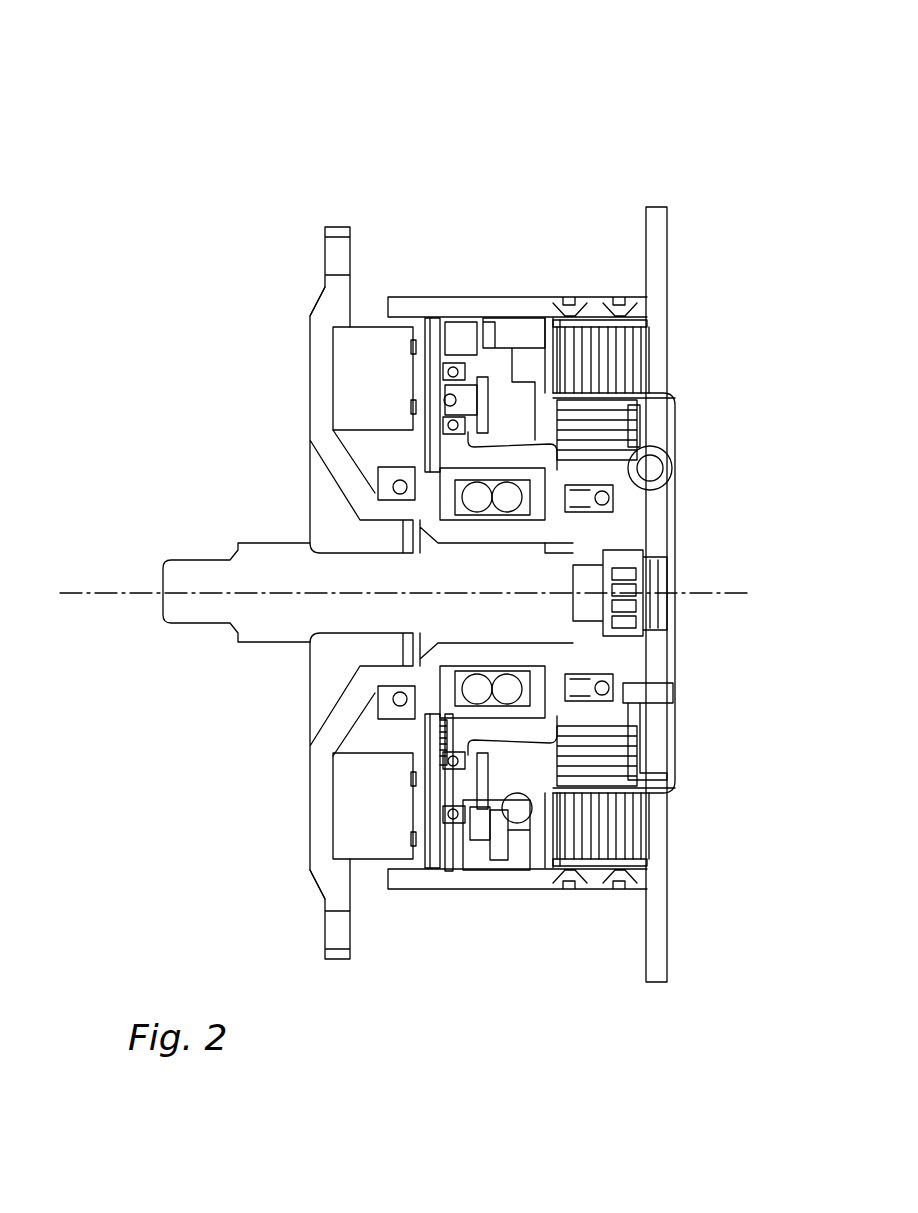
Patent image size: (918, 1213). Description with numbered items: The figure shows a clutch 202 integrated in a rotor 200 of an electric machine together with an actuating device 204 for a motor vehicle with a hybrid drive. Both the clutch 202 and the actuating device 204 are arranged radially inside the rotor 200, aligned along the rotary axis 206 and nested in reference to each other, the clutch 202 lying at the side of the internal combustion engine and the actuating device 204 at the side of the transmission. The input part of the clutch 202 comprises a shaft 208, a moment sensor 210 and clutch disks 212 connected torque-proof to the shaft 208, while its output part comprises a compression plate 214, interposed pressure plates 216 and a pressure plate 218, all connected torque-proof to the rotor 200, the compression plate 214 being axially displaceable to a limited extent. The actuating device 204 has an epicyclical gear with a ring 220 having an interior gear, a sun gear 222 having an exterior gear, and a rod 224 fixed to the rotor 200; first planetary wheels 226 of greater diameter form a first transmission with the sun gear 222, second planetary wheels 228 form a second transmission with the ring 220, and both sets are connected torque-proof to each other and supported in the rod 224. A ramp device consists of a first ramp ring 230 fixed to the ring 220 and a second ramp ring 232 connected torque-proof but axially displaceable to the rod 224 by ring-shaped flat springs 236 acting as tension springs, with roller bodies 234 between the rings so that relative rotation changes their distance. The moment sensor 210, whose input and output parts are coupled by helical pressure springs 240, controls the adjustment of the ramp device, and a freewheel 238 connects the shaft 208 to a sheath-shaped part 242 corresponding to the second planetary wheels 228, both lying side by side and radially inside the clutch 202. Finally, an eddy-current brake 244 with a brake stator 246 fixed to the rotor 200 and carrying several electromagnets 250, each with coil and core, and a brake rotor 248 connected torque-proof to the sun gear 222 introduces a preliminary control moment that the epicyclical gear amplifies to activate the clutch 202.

The rotor 200 is at (520, 303).
The clutch 202 is at (598, 870).
The actuating device 204 is at (303, 782).
The rotary axis 206 is at (83, 593).
The shaft 208 is at (195, 610).
The moment sensor 210 is at (653, 725).
The clutch disks 212 is at (593, 333).
The compression plate 214 is at (543, 347).
The interposed pressure plates 216 is at (638, 343).
The pressure plate 218 is at (657, 358).
The ring 220 is at (477, 362).
The sun gear 222 is at (428, 470).
The rod 224 is at (453, 795).
The first planetary wheels 226 is at (435, 352).
The second planetary wheels 228 is at (480, 378).
The first ramp ring 230 is at (492, 840).
The second ramp ring 232 is at (525, 860).
The roller bodies 234 is at (515, 815).
The flat springs 236 is at (472, 815).
The freewheel 238 is at (600, 686).
The helical pressure springs 240 is at (670, 470).
The sheath-shaped part 242 is at (623, 422).
The eddy-current brake 244 is at (395, 790).
The brake stator 246 is at (310, 315).
The brake rotor 248 is at (417, 380).
The electromagnets 250 is at (358, 398).